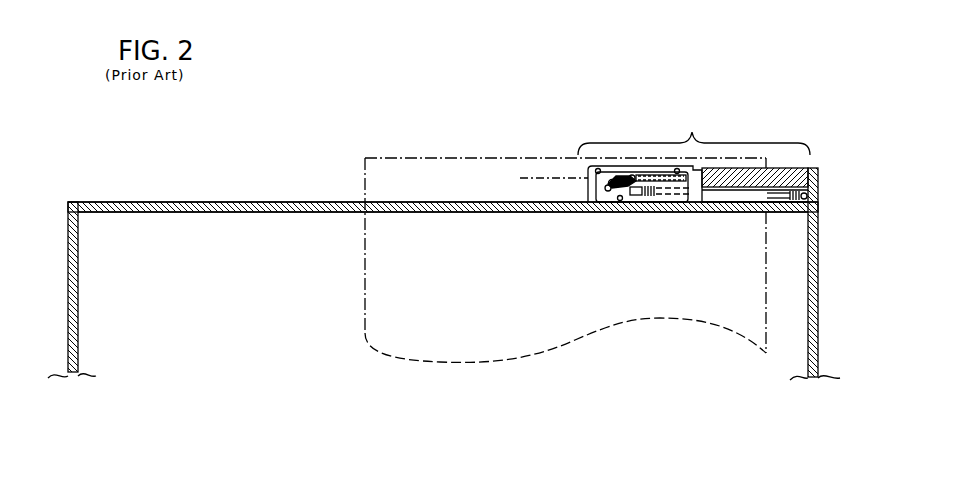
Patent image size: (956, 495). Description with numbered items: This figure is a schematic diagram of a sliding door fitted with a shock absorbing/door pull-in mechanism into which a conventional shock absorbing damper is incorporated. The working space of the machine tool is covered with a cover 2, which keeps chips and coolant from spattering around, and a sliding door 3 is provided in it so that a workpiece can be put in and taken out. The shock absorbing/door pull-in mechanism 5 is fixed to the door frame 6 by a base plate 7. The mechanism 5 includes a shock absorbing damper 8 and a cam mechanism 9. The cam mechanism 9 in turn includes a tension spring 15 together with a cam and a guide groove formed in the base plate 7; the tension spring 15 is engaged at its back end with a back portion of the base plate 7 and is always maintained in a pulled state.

The cover 2 is at (122, 190).
The door frame 6 is at (223, 203).
The sliding door 3 is at (401, 172).
The shock absorbing/door pull-in mechanism 5 is at (694, 126).
The base plate 7 is at (642, 172).
The cam mechanism 9 is at (610, 215).
The tension spring 15 is at (686, 181).
The shock absorbing damper 8 is at (748, 187).